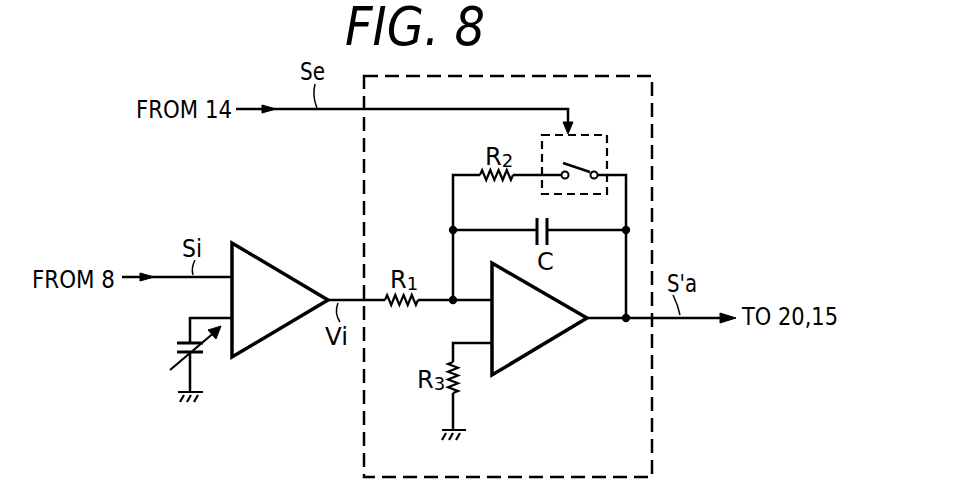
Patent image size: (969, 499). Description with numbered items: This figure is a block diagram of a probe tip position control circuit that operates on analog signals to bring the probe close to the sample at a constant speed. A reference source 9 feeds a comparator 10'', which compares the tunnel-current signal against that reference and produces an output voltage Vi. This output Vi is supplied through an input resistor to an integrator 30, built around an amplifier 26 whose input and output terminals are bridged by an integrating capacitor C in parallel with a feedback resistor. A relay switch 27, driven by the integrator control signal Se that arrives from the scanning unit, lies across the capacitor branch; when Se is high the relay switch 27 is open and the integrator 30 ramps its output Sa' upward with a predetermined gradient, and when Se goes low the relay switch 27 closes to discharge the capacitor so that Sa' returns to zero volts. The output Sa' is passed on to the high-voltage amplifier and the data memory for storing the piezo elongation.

The integrator 30 is at (585, 76).
The relay switch 27 is at (590, 133).
The amplifier 26 is at (550, 342).
The comparator 10'' is at (280, 286).
The reference source 9 is at (210, 352).